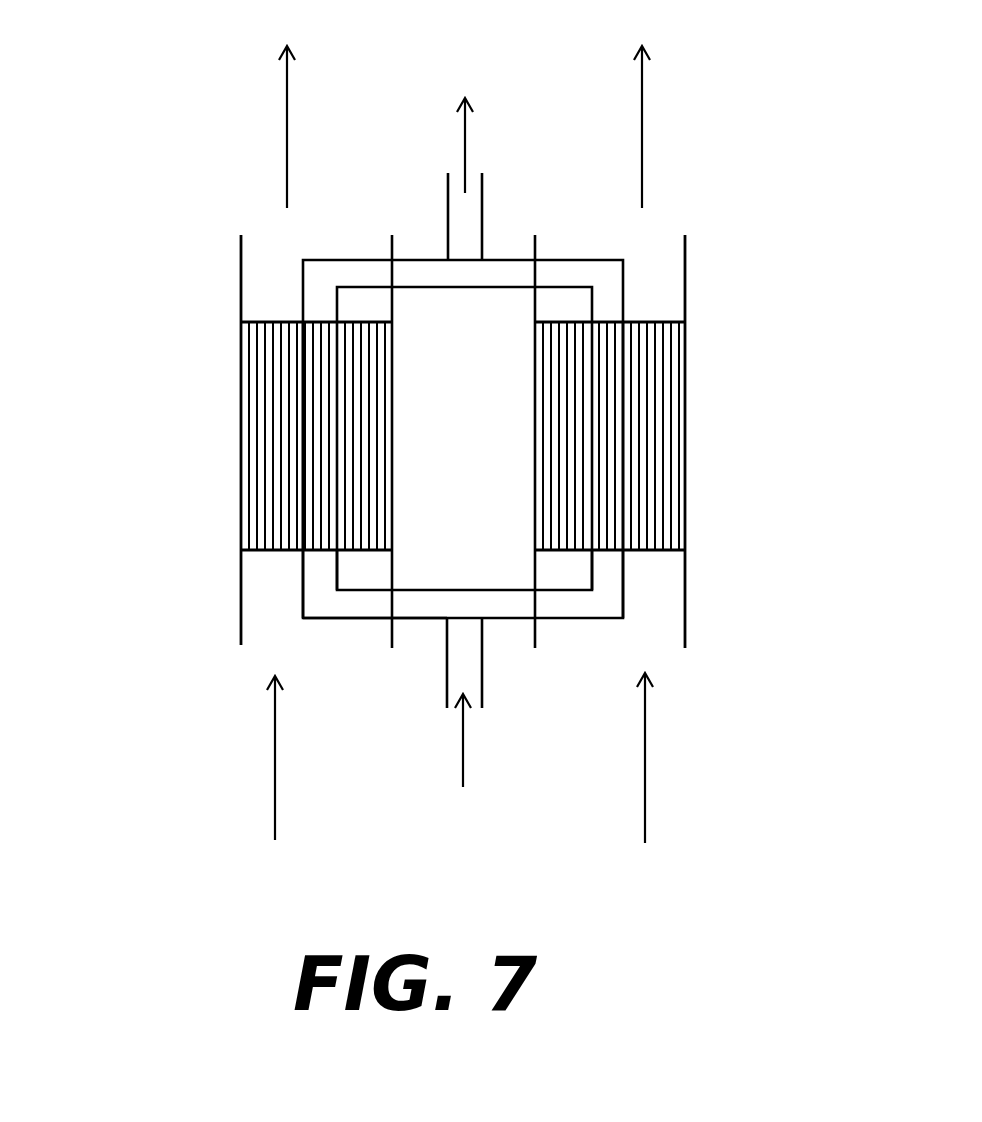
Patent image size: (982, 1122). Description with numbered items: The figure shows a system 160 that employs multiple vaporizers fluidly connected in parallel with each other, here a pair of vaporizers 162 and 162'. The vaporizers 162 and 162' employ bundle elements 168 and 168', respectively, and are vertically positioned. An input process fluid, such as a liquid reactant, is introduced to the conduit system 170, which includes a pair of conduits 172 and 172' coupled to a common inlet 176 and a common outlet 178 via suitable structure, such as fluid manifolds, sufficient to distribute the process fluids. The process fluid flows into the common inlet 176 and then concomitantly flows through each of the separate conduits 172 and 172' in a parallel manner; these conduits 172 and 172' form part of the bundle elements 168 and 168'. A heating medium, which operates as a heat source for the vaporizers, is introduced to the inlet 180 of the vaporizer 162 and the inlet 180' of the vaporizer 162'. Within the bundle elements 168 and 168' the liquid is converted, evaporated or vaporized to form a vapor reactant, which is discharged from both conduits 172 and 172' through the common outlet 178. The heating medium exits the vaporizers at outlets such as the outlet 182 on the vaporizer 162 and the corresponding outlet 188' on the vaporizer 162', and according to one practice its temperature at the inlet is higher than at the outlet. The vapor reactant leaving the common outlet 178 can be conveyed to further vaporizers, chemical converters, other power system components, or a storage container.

The system 160 is at (456, 453).
The vaporizer 162 is at (188, 440).
The vaporizer 162' is at (758, 441).
The bundle element 168 is at (272, 418).
The bundle element 168' is at (660, 416).
The conduit system 170 is at (348, 622).
The conduit 172 is at (250, 584).
The conduit 172' is at (687, 584).
The common inlet 176 is at (470, 705).
The common outlet 178 is at (472, 190).
The inlet 180 is at (234, 638).
The inlet 180' is at (687, 628).
The outlet 182 is at (264, 253).
The heating medium outlet 188' is at (691, 252).